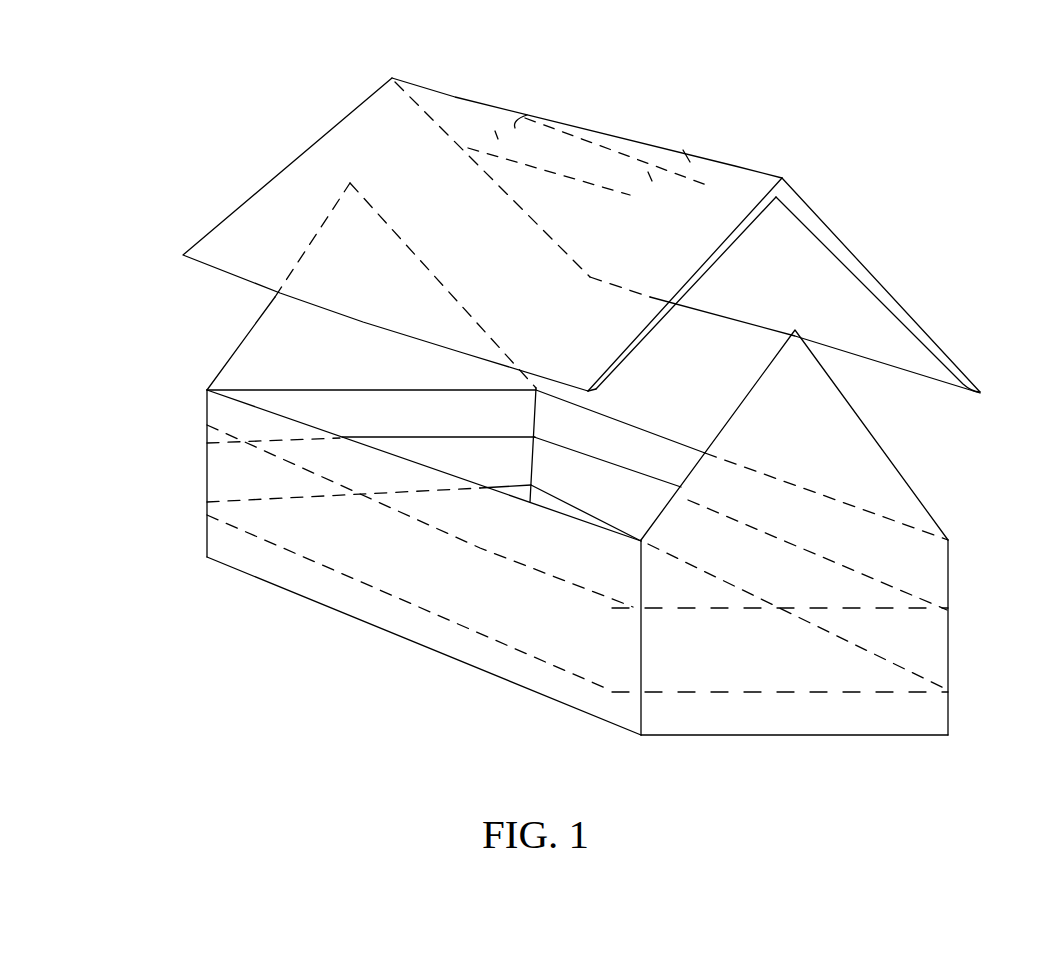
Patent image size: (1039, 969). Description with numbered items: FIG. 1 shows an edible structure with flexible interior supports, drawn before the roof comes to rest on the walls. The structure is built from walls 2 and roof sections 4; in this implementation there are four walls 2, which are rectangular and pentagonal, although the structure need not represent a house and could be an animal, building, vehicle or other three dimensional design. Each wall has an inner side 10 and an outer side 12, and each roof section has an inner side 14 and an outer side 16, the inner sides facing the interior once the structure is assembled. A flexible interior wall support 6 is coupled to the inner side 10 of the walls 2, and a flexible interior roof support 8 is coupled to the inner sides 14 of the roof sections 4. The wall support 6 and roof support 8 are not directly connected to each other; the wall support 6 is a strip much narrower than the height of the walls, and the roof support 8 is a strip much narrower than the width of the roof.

The walls 2 is at (767, 717).
The roof sections 4 is at (760, 188).
The flexible interior wall support 6 is at (632, 500).
The flexible interior roof support 8 is at (620, 152).
The inner side 10 is at (614, 436).
The outer side 12 is at (377, 613).
The inner side 14 is at (903, 355).
The outer side 16 is at (357, 137).